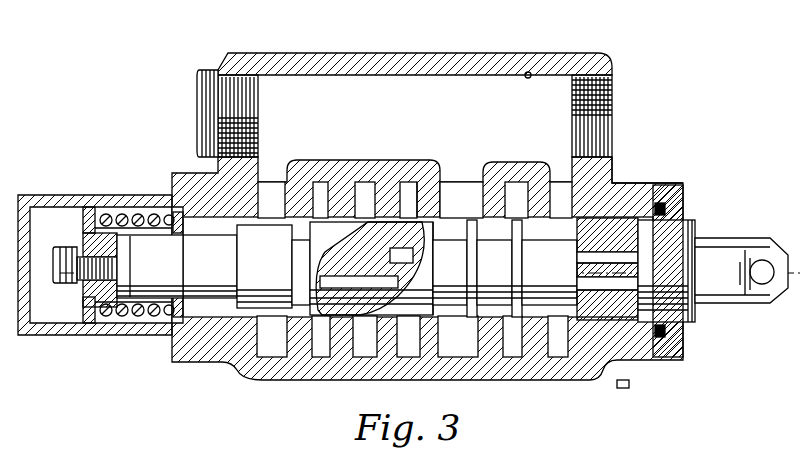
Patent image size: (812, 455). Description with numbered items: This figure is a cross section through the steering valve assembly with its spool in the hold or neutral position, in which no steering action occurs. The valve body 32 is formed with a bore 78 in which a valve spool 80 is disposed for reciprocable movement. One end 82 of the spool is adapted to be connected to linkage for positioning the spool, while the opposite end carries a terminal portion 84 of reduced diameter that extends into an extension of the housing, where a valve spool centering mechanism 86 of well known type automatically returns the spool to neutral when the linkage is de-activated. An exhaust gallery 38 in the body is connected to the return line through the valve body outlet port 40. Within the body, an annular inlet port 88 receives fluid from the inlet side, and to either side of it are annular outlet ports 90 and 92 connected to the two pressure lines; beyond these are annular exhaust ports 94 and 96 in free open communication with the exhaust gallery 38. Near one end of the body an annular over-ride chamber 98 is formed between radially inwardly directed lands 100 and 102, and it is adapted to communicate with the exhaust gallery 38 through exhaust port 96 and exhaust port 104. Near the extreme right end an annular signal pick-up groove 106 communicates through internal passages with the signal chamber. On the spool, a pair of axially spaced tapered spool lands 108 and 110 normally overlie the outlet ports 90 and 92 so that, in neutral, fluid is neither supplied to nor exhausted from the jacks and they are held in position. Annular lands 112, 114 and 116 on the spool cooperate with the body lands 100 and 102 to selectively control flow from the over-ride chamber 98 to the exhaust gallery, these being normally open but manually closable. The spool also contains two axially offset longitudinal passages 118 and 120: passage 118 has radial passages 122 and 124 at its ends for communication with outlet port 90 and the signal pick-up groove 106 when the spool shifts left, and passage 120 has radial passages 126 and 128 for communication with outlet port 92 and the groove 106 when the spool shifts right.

The valve body 32 is at (428, 56).
The exhaust gallery 38 is at (531, 72).
The valve body outlet port 40 is at (587, 140).
The signal pick-up groove 106 is at (615, 196).
The valve spool centering mechanism 86 is at (122, 212).
The exhaust port 94 is at (272, 192).
The outlet port 90 is at (322, 195).
The inlet port 88 is at (366, 200).
The outlet port 92 is at (410, 200).
The tapered spool land 110 is at (432, 200).
The exhaust port 96 is at (455, 188).
The over-ride chamber 98 is at (515, 195).
The exhaust port 104 is at (556, 195).
The radial passage 126 is at (430, 250).
The tapered spool land 108 is at (300, 256).
The longitudinally extending passage 118 is at (338, 256).
The longitudinally extending passage 120 is at (412, 258).
The land 100 is at (483, 230).
The land 102 is at (533, 235).
The radial passage 128 is at (628, 232).
The end of valve spool 82 is at (725, 246).
The bore 78 is at (282, 300).
The annular land 112 is at (460, 302).
The radial passage 122 is at (322, 305).
The annular land 114 is at (521, 308).
The annular land 116 is at (557, 305).
The radial passage 124 is at (626, 308).
The valve spool 80 is at (250, 300).
The terminal portion 84 is at (143, 292).